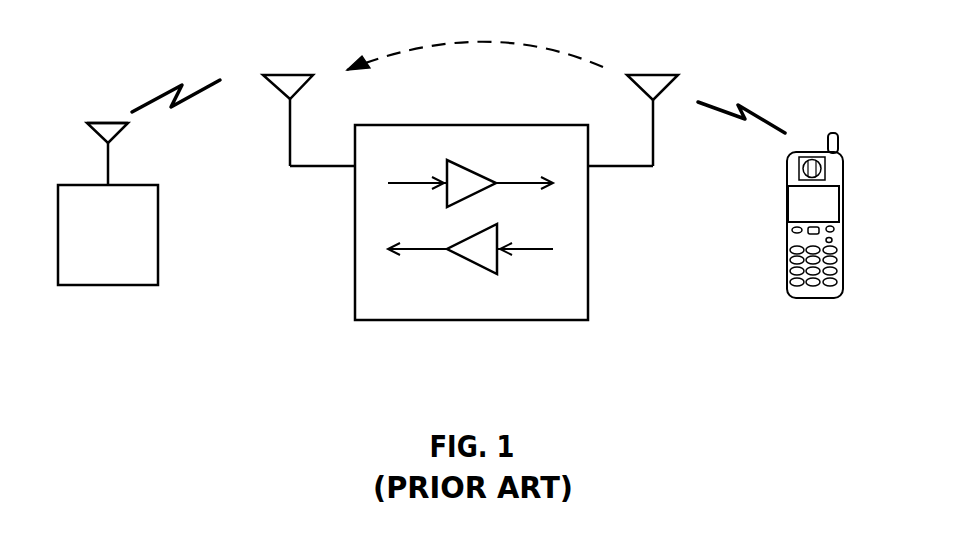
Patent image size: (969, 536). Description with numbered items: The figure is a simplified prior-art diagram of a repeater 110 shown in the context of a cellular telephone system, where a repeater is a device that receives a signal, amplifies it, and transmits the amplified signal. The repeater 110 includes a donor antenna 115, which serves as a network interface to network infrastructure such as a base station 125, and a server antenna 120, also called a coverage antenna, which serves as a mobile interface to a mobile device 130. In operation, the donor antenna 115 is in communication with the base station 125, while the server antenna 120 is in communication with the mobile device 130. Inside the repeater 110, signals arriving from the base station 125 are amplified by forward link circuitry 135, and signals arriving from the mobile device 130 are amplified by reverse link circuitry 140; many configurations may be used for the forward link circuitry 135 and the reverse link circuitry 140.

The repeater 110 is at (522, 320).
The donor antenna 115 is at (303, 86).
The server antenna 120 is at (638, 86).
The base station 125 is at (123, 285).
The mobile device 130 is at (813, 298).
The forward link circuitry 135 is at (471, 170).
The reverse link circuitry 140 is at (475, 265).